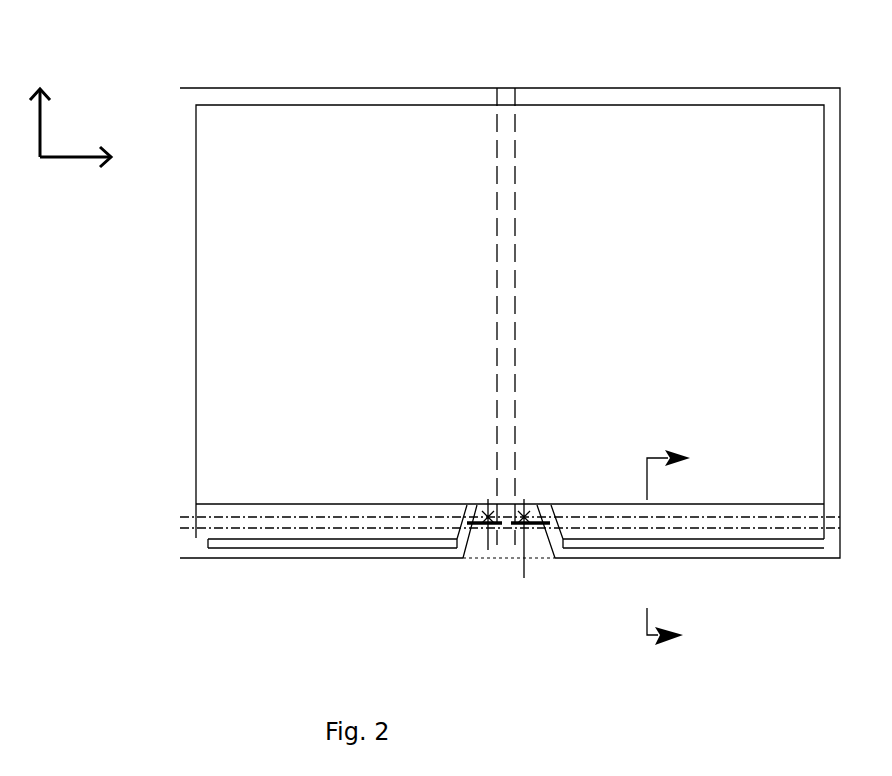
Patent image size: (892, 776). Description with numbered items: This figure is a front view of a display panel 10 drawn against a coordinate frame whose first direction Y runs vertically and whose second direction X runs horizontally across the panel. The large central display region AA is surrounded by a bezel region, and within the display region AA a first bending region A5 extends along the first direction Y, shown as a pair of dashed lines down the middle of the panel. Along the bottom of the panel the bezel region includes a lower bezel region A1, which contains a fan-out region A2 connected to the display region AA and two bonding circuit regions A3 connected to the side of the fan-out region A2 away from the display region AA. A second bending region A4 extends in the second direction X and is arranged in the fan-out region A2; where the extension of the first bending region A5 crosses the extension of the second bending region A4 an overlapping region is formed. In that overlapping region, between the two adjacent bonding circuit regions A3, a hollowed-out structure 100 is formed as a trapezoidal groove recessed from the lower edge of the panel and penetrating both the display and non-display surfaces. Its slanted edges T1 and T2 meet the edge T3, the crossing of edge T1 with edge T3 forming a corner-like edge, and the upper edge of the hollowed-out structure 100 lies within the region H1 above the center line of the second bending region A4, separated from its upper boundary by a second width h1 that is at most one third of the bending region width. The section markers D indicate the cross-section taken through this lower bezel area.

The display panel 10 is at (192, 87).
The display region AA is at (213, 318).
The first bending region A5 is at (515, 170).
The fan-out region A2 is at (247, 507).
The second bending region A4 is at (210, 532).
The lower bezel region A1 is at (195, 548).
The bonding circuit region A3 is at (296, 539).
The hollowed-out structure 100 is at (518, 527).
The edge of the trapezoid T1 is at (548, 522).
The second thickness/slant T2 is at (481, 520).
The edge of the trapezoid T3 is at (500, 525).
The second width h1 is at (480, 514).
The region above the center line H1 is at (539, 528).
The direction D is at (656, 541).
The second direction X is at (87, 156).
The first direction Y is at (40, 108).